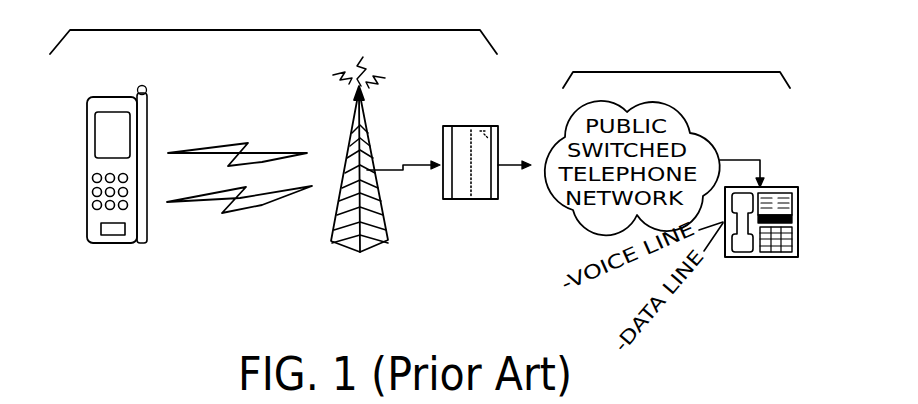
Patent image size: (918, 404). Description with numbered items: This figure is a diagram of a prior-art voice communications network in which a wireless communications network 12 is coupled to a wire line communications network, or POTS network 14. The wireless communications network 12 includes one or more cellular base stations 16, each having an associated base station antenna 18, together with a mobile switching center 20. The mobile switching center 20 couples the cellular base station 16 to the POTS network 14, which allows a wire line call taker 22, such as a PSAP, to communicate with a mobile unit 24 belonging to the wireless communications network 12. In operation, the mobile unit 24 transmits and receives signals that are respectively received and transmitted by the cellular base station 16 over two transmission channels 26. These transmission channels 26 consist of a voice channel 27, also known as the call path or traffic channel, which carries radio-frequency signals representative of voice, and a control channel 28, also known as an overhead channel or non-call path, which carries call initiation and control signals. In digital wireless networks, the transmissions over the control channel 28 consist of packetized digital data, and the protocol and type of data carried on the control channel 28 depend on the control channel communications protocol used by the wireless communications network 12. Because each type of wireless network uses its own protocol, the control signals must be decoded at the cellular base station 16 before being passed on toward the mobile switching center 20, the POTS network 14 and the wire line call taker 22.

The wireless communications network 12 is at (306, 30).
The wire line communications network (POTS network) 14 is at (683, 72).
The cellular base station 16 is at (424, 277).
The base station antenna 18 is at (368, 250).
The mobile switching center 20 is at (462, 133).
The wire line call taker 22 is at (800, 212).
The mobile unit 24 is at (92, 163).
The transmission channels 26 is at (230, 263).
The voice channel 27 is at (203, 203).
The control channel 28 is at (213, 147).